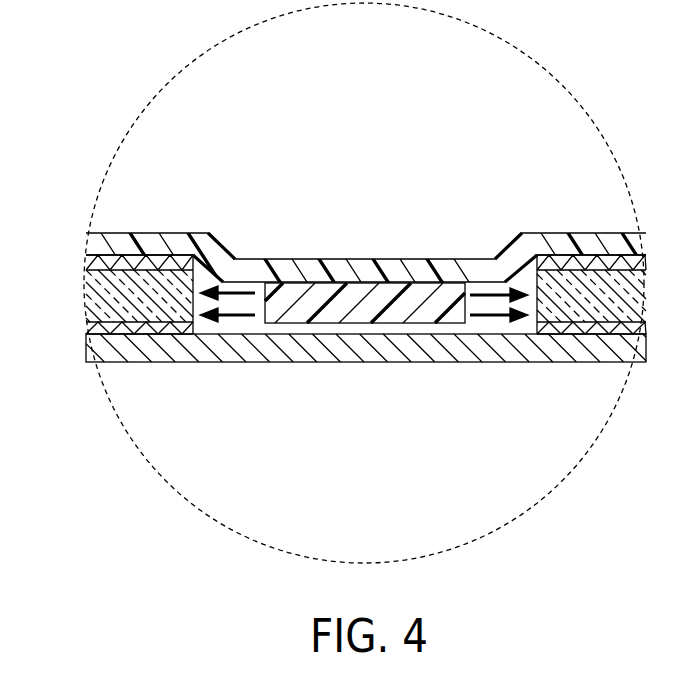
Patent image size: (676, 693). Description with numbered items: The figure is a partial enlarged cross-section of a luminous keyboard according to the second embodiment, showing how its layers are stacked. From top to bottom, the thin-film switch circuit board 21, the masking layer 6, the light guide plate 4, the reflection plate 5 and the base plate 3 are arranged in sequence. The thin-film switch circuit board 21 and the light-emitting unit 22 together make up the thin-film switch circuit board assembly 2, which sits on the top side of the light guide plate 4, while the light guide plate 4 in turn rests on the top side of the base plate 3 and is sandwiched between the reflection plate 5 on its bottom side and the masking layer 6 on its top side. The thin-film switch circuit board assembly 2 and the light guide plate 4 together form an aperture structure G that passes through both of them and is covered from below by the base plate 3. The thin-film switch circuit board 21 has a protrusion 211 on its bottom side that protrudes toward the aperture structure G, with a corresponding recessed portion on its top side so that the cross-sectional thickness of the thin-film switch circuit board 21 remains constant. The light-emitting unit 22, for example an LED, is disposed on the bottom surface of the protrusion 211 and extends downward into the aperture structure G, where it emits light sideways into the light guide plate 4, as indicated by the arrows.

The thin-film switch circuit board assembly 2 is at (372, 221).
The thin-film switch circuit board 21 is at (173, 238).
The light-emitting unit 22 is at (365, 242).
The protrusion 211 is at (546, 265).
The base plate 3 is at (316, 364).
The light guide plate 4 is at (87, 295).
The reflection plate 5 is at (88, 331).
The masking layer 6 is at (86, 259).
The aperture structure G is at (253, 330).